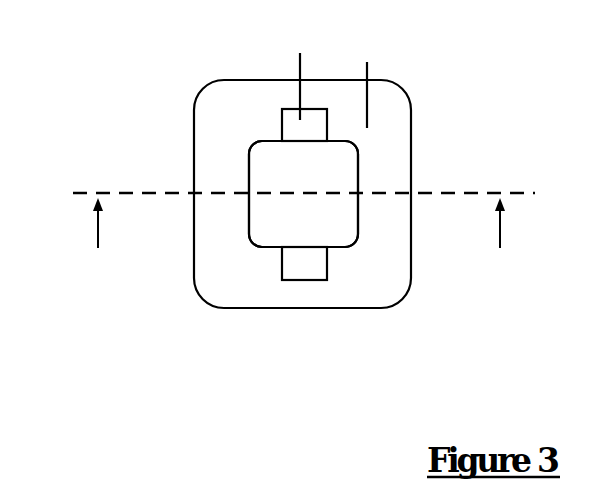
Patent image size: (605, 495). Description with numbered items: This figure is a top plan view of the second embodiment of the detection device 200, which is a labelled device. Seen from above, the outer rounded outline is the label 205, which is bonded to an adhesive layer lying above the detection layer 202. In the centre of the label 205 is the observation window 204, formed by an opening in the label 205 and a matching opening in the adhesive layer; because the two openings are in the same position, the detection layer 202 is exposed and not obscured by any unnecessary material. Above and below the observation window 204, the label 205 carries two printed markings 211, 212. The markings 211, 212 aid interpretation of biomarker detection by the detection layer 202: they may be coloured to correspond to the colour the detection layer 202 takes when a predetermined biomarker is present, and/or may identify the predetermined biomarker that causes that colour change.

The detection device 200 is at (127, 77).
The detection layer 202 is at (266, 217).
The observation window 204 is at (337, 174).
The label 205 is at (368, 77).
The marking 211 is at (302, 81).
The marking 212 is at (313, 266).